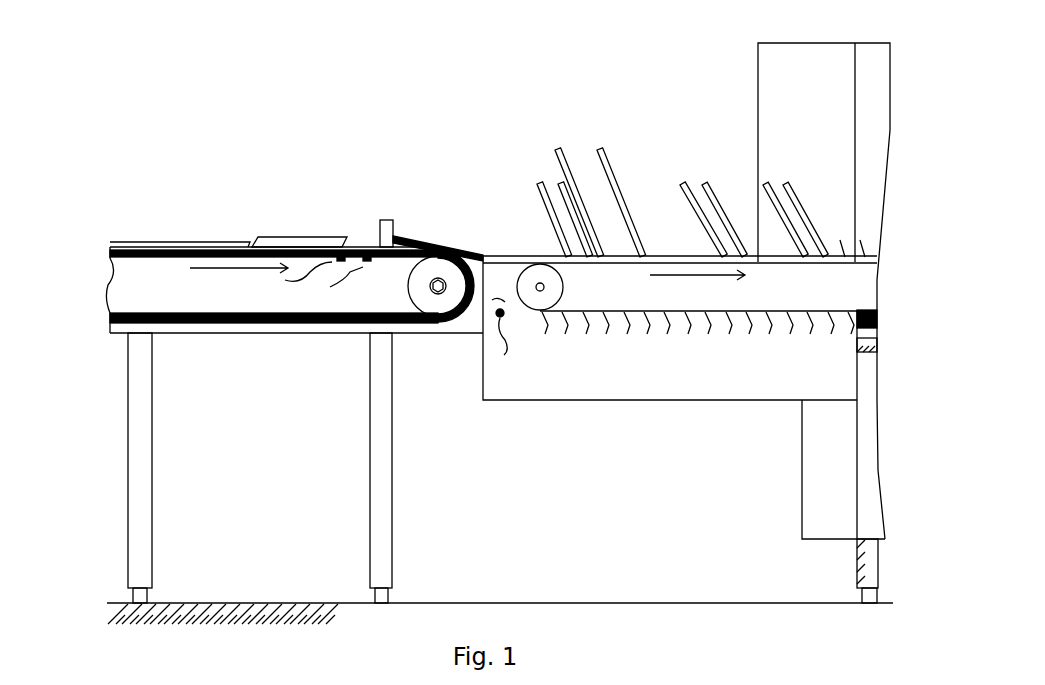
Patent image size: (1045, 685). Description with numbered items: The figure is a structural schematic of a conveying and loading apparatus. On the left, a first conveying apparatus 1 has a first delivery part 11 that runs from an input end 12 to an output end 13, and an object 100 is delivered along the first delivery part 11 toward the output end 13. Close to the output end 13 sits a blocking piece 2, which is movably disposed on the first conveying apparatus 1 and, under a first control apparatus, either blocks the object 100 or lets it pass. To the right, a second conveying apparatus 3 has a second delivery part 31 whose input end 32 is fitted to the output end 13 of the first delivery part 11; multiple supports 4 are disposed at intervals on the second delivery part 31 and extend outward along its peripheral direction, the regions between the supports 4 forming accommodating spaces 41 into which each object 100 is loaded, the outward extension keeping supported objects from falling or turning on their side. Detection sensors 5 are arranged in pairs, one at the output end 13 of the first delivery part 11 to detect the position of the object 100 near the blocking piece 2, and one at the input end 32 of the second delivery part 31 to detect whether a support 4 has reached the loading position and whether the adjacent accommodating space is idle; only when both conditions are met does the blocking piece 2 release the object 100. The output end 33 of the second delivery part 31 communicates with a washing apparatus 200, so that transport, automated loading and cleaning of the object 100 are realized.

The first conveying apparatus 1 is at (133, 363).
The first delivery part 11 is at (182, 283).
The input end 12 is at (130, 265).
The output end 13 is at (393, 297).
The blocking piece 2 is at (380, 220).
The detection sensors 5 is at (365, 259).
The object 100 is at (190, 243).
The washing apparatus 200 is at (795, 155).
The second conveying apparatus 3 is at (750, 385).
The second delivery part 31 is at (713, 290).
The input end 32 is at (543, 302).
The output end 33 is at (805, 283).
The supports 4 is at (648, 332).
The accommodating spaces 41 is at (802, 328).